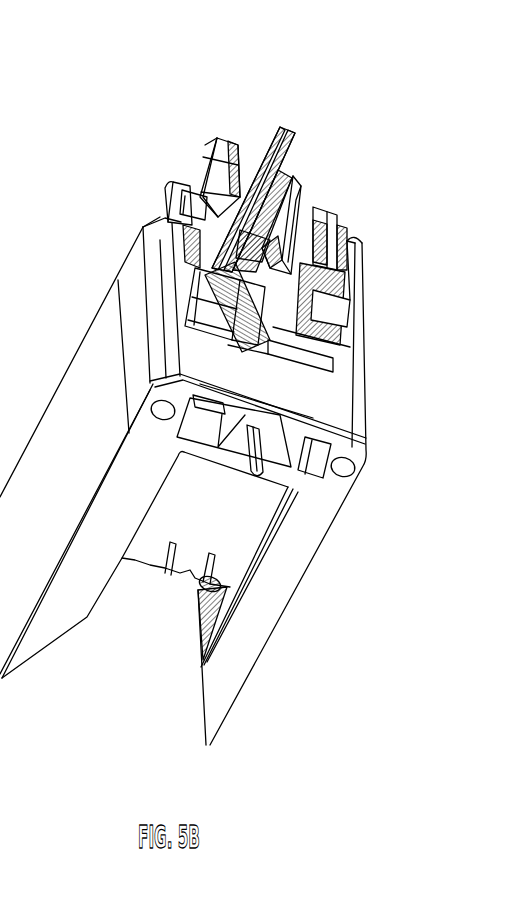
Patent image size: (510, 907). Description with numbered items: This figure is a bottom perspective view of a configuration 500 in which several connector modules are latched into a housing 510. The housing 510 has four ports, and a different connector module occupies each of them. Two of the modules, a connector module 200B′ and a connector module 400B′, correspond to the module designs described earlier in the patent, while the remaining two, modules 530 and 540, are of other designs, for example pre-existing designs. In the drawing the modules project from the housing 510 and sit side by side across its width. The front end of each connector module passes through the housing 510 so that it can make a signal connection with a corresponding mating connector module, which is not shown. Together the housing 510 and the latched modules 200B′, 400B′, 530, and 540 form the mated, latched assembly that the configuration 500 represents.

The configuration 500 is at (95, 90).
The housing 510 is at (80, 352).
The connector module 200B′ is at (223, 121).
The connector module 400B′ is at (270, 121).
The module of other design 530 is at (303, 210).
The module of other design 540 is at (343, 223).